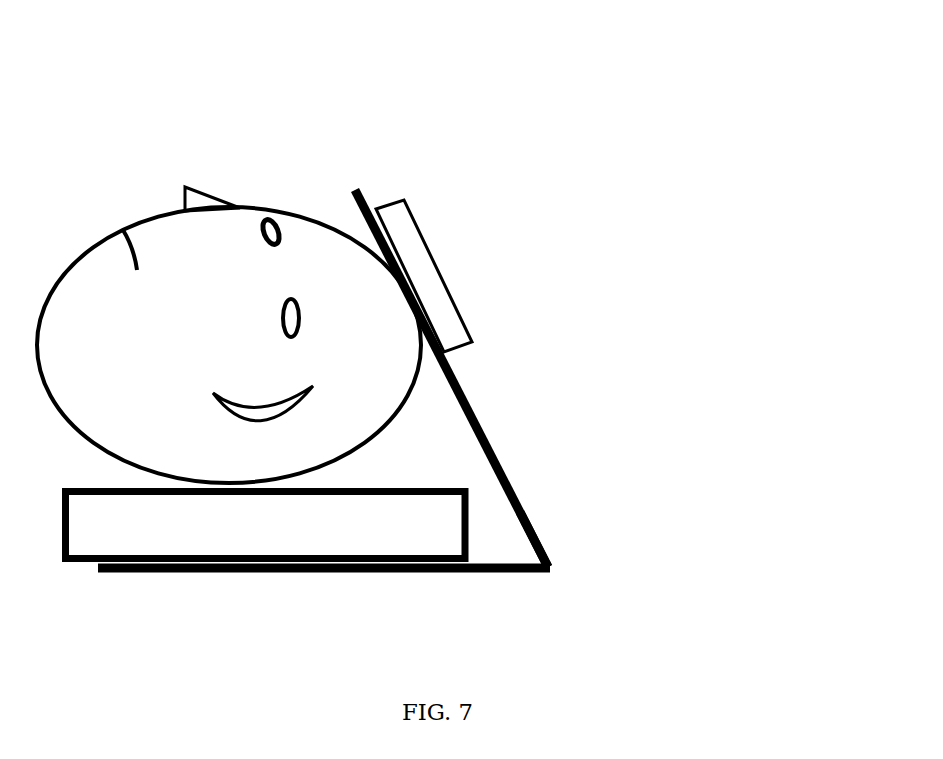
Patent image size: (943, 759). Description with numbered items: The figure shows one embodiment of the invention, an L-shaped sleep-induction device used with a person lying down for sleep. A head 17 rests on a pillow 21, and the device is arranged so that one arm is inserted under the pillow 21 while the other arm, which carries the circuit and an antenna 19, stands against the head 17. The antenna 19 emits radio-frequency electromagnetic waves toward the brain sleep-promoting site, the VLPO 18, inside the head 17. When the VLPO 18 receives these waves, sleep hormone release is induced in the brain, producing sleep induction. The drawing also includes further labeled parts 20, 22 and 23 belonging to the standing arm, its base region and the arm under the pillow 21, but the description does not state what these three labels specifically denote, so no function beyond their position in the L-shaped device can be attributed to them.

The head 17 is at (291, 296).
The brain sleep-promoting site VLPO 18 is at (307, 217).
The antenna 19 is at (428, 253).
The inclined support plate 20 is at (468, 420).
The pillow 21 is at (397, 520).
The plate base corner 22 is at (537, 535).
The base plate 23 is at (508, 572).